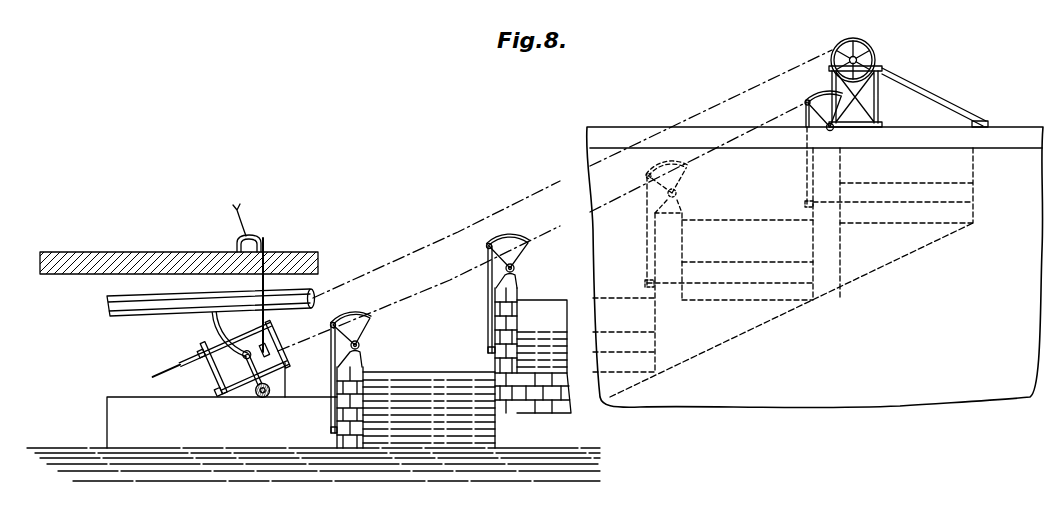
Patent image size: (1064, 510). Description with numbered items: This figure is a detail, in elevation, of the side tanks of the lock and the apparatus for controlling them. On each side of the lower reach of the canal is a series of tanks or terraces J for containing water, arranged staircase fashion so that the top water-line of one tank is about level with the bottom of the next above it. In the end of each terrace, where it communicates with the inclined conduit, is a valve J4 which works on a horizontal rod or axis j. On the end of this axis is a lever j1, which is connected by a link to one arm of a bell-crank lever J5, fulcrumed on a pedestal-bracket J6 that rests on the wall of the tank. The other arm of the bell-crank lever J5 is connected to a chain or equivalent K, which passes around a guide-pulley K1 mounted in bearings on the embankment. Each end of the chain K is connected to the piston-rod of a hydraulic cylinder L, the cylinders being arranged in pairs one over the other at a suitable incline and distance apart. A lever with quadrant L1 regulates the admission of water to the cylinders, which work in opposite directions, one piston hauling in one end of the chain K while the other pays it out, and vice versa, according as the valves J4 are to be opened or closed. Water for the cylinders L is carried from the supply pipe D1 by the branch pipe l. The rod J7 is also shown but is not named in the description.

The lever with quadrant L1 is at (248, 233).
The pipe D1 is at (211, 311).
The branch pipe l is at (222, 334).
The hydraulic cylinder L is at (222, 374).
The horizontal rod or axis j is at (496, 433).
The tank or terrace J is at (668, 295).
The valve J4 is at (712, 349).
The rod J7 is at (330, 413).
The lever j1 is at (488, 336).
The bell-crank lever J5 is at (366, 324).
The pedestal-bracket J6 is at (363, 356).
The chain K is at (470, 231).
The guide-pulley K1 is at (866, 52).